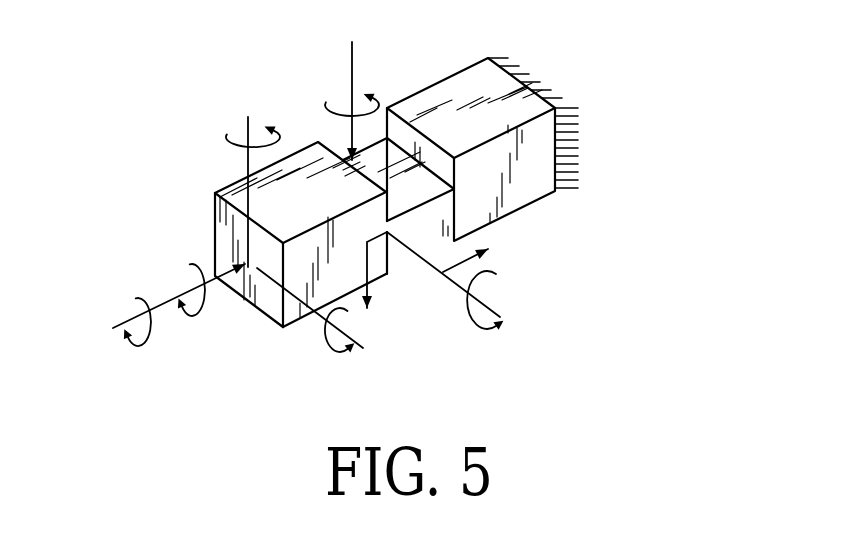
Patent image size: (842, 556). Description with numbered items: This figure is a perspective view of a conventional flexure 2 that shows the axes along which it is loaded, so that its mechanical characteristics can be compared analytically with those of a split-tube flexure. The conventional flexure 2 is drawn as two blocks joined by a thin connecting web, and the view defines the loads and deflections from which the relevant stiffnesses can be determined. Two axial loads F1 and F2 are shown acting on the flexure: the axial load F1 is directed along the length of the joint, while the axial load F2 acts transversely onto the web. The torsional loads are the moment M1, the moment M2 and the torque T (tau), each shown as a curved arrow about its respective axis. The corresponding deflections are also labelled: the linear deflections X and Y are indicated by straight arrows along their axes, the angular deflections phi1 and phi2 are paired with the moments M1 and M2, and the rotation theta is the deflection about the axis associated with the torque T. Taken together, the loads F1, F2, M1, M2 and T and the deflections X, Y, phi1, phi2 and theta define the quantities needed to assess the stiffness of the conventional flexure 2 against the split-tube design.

The conventional flexure 2 is at (140, 102).
The axial load F1 is at (158, 318).
The axial load F2 is at (336, 85).
The torsional load M1 is at (233, 171).
The torsional load M2 is at (155, 348).
The deflection phi1 is at (368, 82).
The deflection phi2 is at (210, 315).
The torsional load tau T is at (310, 331).
The deflection x X is at (477, 252).
The deflection y Y is at (377, 278).
The deflection theta is at (450, 301).